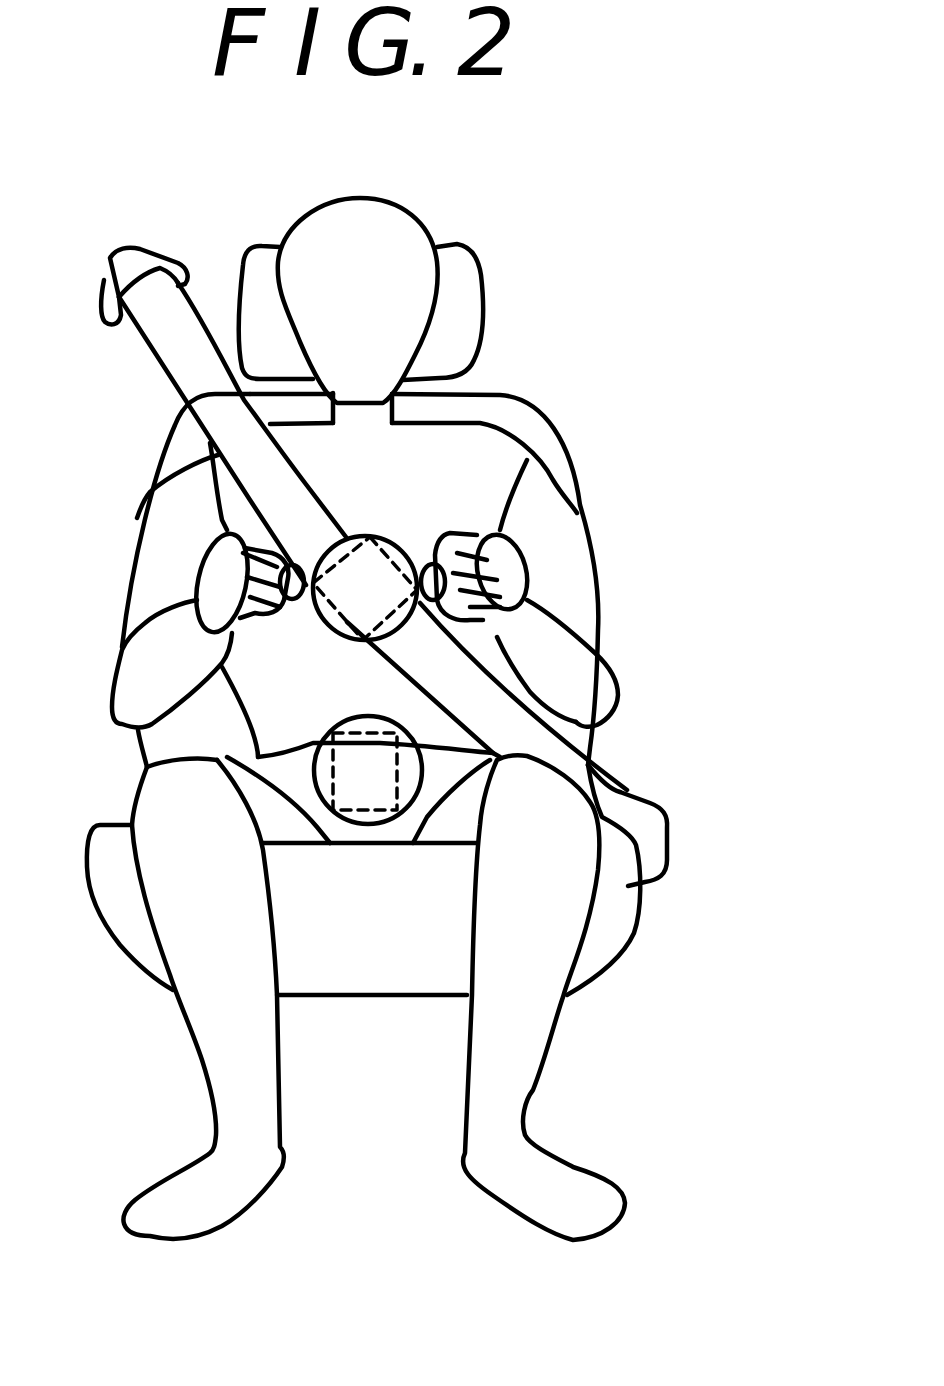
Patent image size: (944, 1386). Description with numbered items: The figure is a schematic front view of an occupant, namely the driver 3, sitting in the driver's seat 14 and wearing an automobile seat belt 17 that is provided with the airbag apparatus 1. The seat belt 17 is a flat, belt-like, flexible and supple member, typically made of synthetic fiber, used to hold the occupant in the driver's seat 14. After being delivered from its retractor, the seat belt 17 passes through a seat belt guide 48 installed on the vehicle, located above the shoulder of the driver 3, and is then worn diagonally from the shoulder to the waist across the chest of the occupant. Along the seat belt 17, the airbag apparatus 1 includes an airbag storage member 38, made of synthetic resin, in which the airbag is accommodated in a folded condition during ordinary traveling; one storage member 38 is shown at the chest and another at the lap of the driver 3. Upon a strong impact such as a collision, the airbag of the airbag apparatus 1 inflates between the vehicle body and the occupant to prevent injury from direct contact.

The airbag apparatus 1 is at (714, 342).
The driver 3 is at (563, 522).
The driver's seat 14 is at (593, 943).
The seat belt 17 is at (173, 360).
The airbag storage member 38 is at (400, 547).
The seat belt guide 48 is at (131, 262).